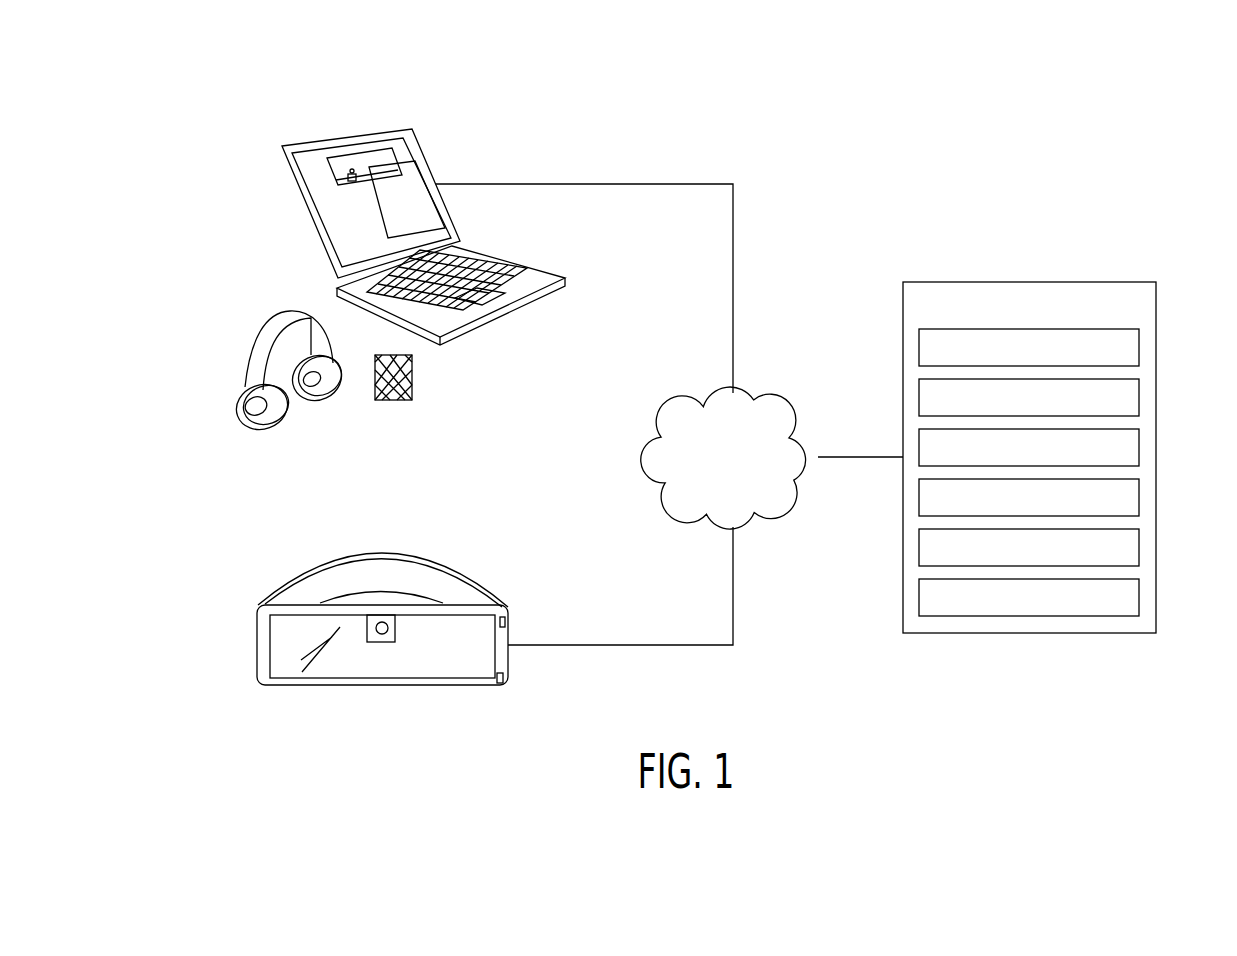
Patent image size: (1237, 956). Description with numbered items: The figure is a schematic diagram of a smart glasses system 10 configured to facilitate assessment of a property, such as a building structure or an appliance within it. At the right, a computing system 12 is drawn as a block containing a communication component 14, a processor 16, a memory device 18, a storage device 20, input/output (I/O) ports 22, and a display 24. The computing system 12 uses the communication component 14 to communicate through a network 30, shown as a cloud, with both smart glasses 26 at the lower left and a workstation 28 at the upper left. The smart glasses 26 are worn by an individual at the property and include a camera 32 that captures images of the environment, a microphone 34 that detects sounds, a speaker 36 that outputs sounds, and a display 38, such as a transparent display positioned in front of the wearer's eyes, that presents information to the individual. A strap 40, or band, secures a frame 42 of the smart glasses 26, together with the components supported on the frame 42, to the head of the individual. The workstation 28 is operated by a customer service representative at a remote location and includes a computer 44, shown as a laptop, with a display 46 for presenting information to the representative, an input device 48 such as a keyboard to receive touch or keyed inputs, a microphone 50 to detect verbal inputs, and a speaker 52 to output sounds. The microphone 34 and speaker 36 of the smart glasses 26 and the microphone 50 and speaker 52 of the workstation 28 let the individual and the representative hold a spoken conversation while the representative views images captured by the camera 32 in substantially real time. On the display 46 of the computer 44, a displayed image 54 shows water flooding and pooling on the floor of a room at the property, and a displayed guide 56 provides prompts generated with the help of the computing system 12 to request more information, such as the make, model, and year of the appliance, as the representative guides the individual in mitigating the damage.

The smart glasses system 10 is at (833, 181).
The computing system 12 is at (1058, 436).
The communication component 14 is at (1139, 343).
The processor 16 is at (1139, 393).
The memory device 18 is at (1139, 443).
The storage device 20 is at (1139, 493).
The input/output (I/O) ports 22 is at (1139, 543).
The display 24 is at (1139, 593).
The smart glasses 26 is at (380, 632).
The workstation 28 is at (404, 212).
The network 30 is at (787, 397).
The camera 32 is at (389, 628).
The microphone 34 is at (504, 683).
The speaker 36 is at (510, 622).
The display 38 is at (268, 645).
The strap 40 is at (457, 567).
The frame 42 is at (380, 690).
The computer 44 is at (427, 157).
The display 46 is at (373, 146).
The input device 48 is at (497, 258).
The microphone 50 is at (412, 378).
The speaker 52 is at (262, 328).
The displayed image 54 is at (332, 181).
The displayed guide 56 is at (378, 211).